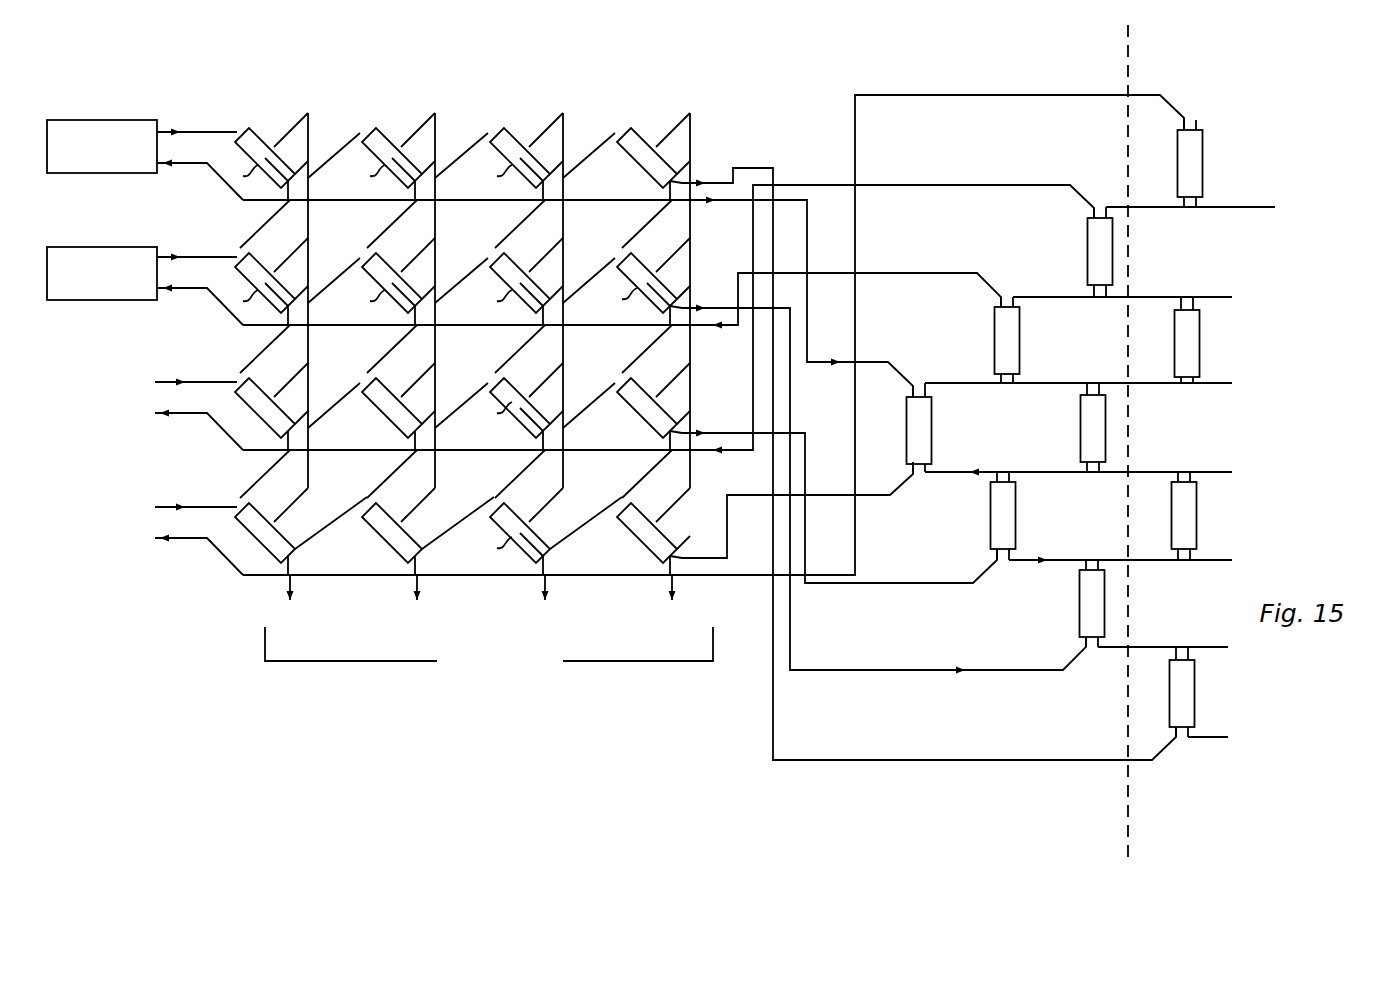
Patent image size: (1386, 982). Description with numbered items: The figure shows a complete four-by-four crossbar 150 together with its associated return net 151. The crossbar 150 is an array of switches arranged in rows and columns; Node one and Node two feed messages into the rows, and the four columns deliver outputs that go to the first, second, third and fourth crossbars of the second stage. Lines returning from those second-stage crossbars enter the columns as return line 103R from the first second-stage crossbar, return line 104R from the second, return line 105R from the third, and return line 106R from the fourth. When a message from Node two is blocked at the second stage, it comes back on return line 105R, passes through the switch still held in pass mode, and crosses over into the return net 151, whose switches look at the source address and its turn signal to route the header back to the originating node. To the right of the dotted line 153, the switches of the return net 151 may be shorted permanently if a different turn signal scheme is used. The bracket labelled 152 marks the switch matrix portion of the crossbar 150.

The return line 103R is at (240, 115).
The return line 104R is at (367, 115).
The return line 105R is at (495, 115).
The return line 106R is at (622, 115).
The crossbar 150 is at (661, 441).
The return net 151 is at (1014, 441).
The coupler matrix 152 is at (704, 394).
The dotted line 153 is at (1133, 52).